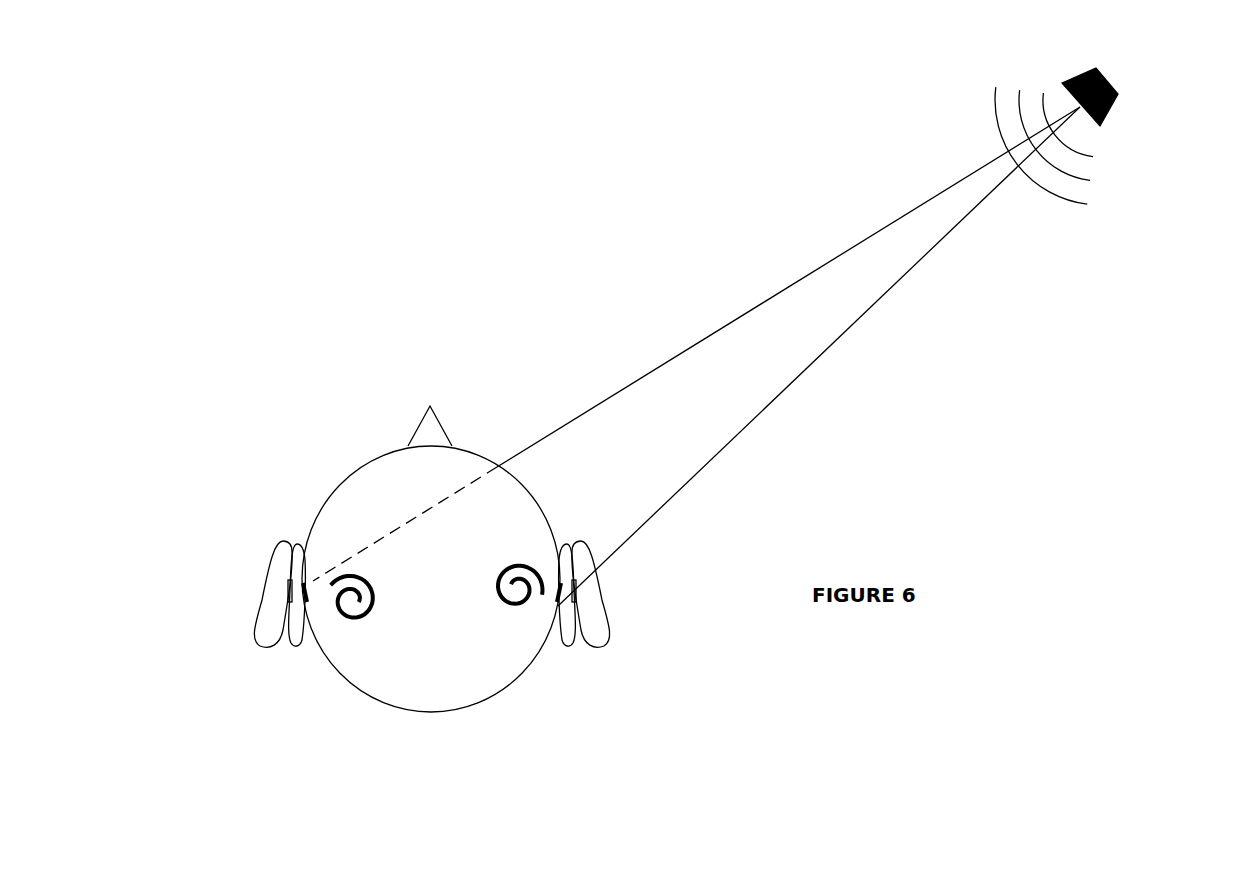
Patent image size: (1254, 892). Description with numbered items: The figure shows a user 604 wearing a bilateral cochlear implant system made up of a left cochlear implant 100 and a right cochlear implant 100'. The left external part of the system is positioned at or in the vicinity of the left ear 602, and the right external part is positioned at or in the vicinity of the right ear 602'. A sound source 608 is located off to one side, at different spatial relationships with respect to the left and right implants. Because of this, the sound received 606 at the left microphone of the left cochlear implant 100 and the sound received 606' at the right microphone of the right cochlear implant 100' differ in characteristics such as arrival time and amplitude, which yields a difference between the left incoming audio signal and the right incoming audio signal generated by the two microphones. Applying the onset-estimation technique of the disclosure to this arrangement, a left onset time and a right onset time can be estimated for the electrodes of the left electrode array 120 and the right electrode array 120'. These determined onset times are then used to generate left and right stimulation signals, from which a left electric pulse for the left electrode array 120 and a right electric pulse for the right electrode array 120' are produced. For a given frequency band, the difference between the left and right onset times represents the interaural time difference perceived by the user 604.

The user 604 is at (333, 487).
The left ear 602 is at (210, 594).
The right ear 602' is at (648, 594).
The left cochlear implant 100 is at (257, 634).
The right cochlear implant 100' is at (604, 636).
The left electrode array 120 is at (340, 664).
The right electrode array 120' is at (532, 666).
The sound received at left microphone 606 is at (696, 344).
The sound received at right microphone 606' is at (819, 356).
The sound source 608 is at (1108, 115).